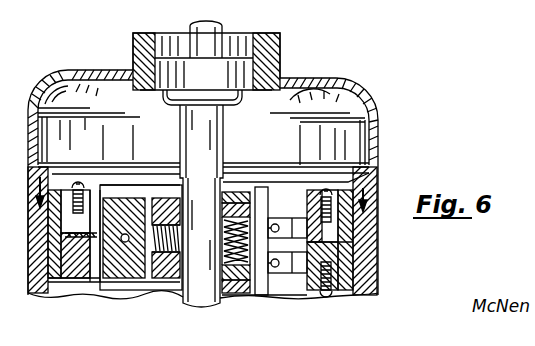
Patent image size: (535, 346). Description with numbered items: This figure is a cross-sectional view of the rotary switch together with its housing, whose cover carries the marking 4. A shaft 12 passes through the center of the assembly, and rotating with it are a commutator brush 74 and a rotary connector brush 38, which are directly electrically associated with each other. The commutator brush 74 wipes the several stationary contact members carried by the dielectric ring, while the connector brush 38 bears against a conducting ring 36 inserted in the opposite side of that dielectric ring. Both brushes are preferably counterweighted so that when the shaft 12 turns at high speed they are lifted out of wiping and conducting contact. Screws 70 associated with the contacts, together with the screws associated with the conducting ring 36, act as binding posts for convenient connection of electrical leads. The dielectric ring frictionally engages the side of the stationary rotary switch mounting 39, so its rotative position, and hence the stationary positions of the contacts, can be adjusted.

The housing cover 4 is at (80, 156).
The shaft 12 is at (183, 301).
The conducting ring 36 is at (82, 272).
The rotary connector brush 38 is at (320, 288).
The stationary rotary switch mounting 39 is at (367, 253).
The screws 70 is at (328, 194).
The commutator brush 74 is at (298, 187).